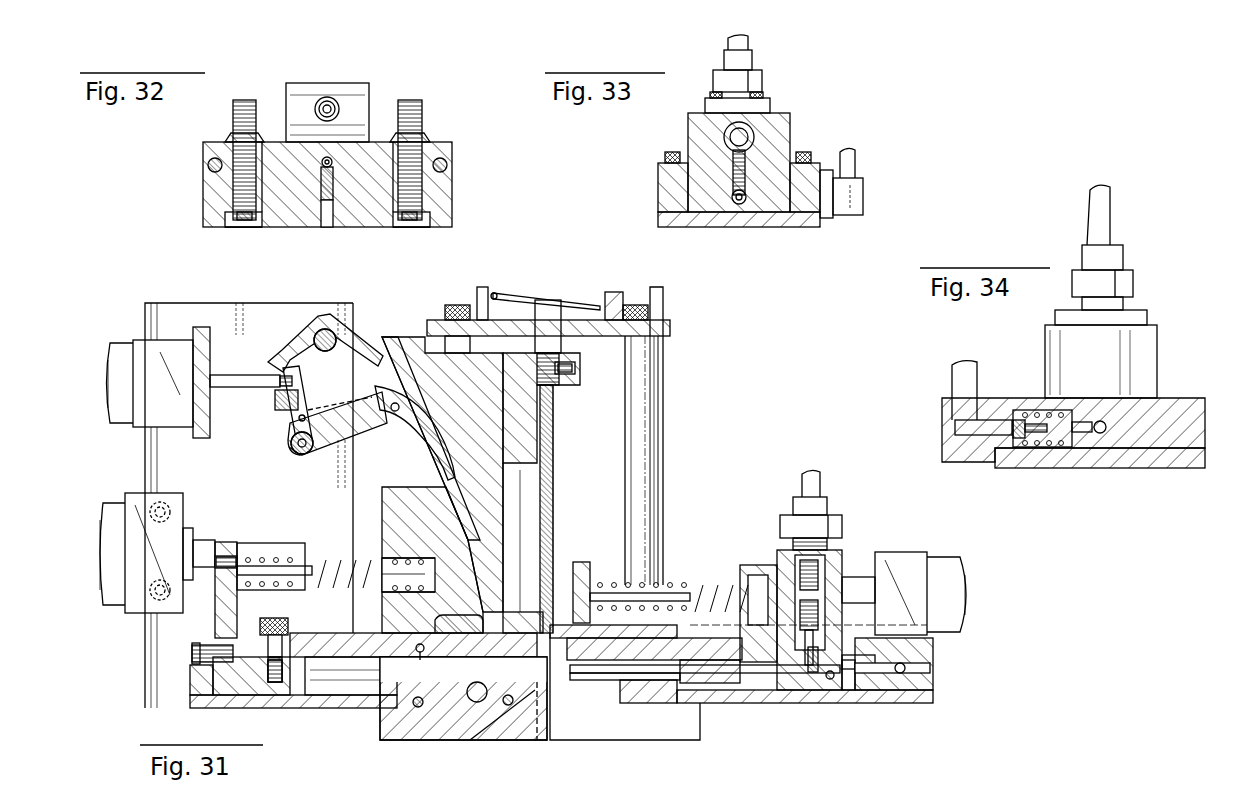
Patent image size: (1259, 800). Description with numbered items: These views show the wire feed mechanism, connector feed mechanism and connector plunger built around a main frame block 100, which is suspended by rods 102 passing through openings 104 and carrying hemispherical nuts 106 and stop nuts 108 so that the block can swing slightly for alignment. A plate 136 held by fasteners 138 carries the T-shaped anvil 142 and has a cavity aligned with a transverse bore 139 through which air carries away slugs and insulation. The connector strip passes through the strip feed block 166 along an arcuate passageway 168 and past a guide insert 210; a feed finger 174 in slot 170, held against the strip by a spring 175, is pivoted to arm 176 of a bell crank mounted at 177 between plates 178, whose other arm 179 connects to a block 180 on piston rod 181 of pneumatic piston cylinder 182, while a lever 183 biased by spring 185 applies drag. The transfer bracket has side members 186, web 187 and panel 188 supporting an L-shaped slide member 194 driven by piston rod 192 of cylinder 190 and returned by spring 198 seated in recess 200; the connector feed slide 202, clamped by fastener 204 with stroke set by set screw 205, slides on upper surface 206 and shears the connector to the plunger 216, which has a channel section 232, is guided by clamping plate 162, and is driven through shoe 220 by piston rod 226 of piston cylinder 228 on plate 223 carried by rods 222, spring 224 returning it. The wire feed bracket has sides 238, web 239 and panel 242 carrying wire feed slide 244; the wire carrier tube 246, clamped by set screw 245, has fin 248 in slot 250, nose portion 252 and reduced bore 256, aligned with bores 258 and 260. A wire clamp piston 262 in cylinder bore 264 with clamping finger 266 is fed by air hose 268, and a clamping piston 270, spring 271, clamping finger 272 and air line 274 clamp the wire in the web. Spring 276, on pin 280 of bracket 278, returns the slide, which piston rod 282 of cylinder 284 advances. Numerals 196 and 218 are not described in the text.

In FIG. 32, the main frame block 100 is at (372, 215).
In FIG. 31, the main frame block 100 is at (562, 742).
In FIG. 32, the rods 102 is at (240, 108).
In FIG. 31, the rods 102 is at (452, 305).
In FIG. 32, the openings 104 is at (225, 155).
In FIG. 32, the hemispherical nuts 106 is at (228, 212).
In FIG. 32, the stop nuts 108 is at (226, 138).
In FIG. 31, the plate 136 is at (462, 740).
In FIG. 31, the fasteners 138 is at (416, 708).
In FIG. 31, the transverse bore 139 is at (470, 700).
In FIG. 31, the anvil 142 is at (537, 742).
In FIG. 31, the clamping plate 162 is at (520, 610).
In FIG. 31, the strip feed block 166 is at (410, 342).
In FIG. 31, the arcuate passageway 168 is at (473, 505).
In FIG. 31, the slot 170 is at (385, 488).
In FIG. 31, the feed finger 174 is at (438, 452).
In FIG. 31, the spring 175 is at (332, 402).
In FIG. 31, the arm 176 is at (348, 445).
In FIG. 31, the pivot 177 is at (292, 458).
In FIG. 31, the plates 178 is at (195, 303).
In FIG. 31, the arm 179 is at (291, 443).
In FIG. 31, the block 180 is at (296, 418).
In FIG. 31, the piston rod 181 is at (232, 375).
In FIG. 31, the pneumatic piston cylinder 182 is at (150, 412).
In FIG. 31, the lever 183 is at (360, 340).
In FIG. 31, the spring 185 is at (275, 400).
In FIG. 31, the side members 186 is at (325, 690).
In FIG. 31, the web 187 is at (197, 684).
In FIG. 31, the panel 188 is at (262, 700).
In FIG. 31, the pneumatic piston cylinder 190 is at (120, 494).
In FIG. 31, the piston rod 192 is at (203, 530).
In FIG. 31, the slide member 194 is at (218, 615).
In FIG. 31, the spring housing 196 is at (272, 558).
In FIG. 31, the spring 198 is at (326, 560).
In FIG. 31, the recess 200 is at (400, 556).
In FIG. 31, the connector feed slide 202 is at (336, 640).
In FIG. 31, the fastener 204 is at (274, 618).
In FIG. 31, the set screw 205 is at (190, 652).
In FIG. 31, the upper surface 206 is at (422, 655).
In FIG. 31, the guide insert 210 is at (455, 615).
In FIG. 31, the plunger 216 is at (555, 515).
In FIG. 31, the shaft 218 is at (555, 422).
In FIG. 31, the shoe 220 is at (577, 378).
In FIG. 31, the rods 222 is at (462, 346).
In FIG. 31, the plate 223 is at (672, 328).
In FIG. 31, the spring 224 is at (515, 293).
In FIG. 31, the piston rod 226 is at (562, 310).
In FIG. 31, the piston cylinder 228 is at (625, 298).
In FIG. 31, the channel-shaped cross section 232 is at (512, 565).
In FIG. 33, the sides 238 is at (672, 190).
In FIG. 31, the sides 238 is at (730, 690).
In FIG. 34, the web 239 is at (1180, 398).
In FIG. 31, the web 239 is at (935, 660).
In FIG. 33, the panel 242 is at (702, 226).
In FIG. 34, the panel 242 is at (1165, 460).
In FIG. 31, the panel 242 is at (775, 710).
In FIG. 32, the wire feed slide 244 is at (360, 92).
In FIG. 33, the wire feed slide 244 is at (768, 225).
In FIG. 34, the wire feed slide 244 is at (1150, 335).
In FIG. 31, the wire feed slide 244 is at (815, 705).
In FIG. 33, the set screw 245 is at (745, 172).
In FIG. 31, the set screw 245 is at (740, 651).
In FIG. 32, the wire carrier tube 246 is at (320, 162).
In FIG. 33, the wire carrier tube 246 is at (730, 196).
In FIG. 31, the wire carrier tube 246 is at (702, 706).
In FIG. 32, the depending fin 248 is at (333, 192).
In FIG. 31, the depending fin 248 is at (650, 703).
In FIG. 32, the slot 250 is at (320, 215).
In FIG. 31, the nose portion 252 is at (572, 680).
In FIG. 31, the smaller diameter bore 256 is at (602, 682).
In FIG. 31, the bore 258 is at (833, 690).
In FIG. 34, the bore 260 is at (1107, 427).
In FIG. 31, the bore 260 is at (903, 690).
In FIG. 31, the wire clamp piston 262 is at (830, 628).
In FIG. 31, the cylinder bore 264 is at (855, 580).
In FIG. 31, the clamping finger 266 is at (845, 658).
In FIG. 33, the flexible air hose 268 is at (750, 44).
In FIG. 34, the flexible air hose 268 is at (1110, 212).
In FIG. 31, the flexible air hose 268 is at (815, 480).
In FIG. 34, the clamping piston 270 is at (1055, 448).
In FIG. 34, the spring 271 is at (1055, 410).
In FIG. 34, the clamping finger 272 is at (1090, 440).
In FIG. 33, the flexible air line 274 is at (855, 160).
In FIG. 34, the flexible air line 274 is at (952, 375).
In FIG. 31, the spring 276 is at (720, 585).
In FIG. 31, the bracket 278 is at (585, 565).
In FIG. 32, the pin 280 is at (325, 100).
In FIG. 33, the pin 280 is at (750, 130).
In FIG. 31, the pin 280 is at (672, 580).
In FIG. 31, the piston rod 282 is at (901, 593).
In FIG. 31, the pneumatic piston cylinder 284 is at (970, 595).